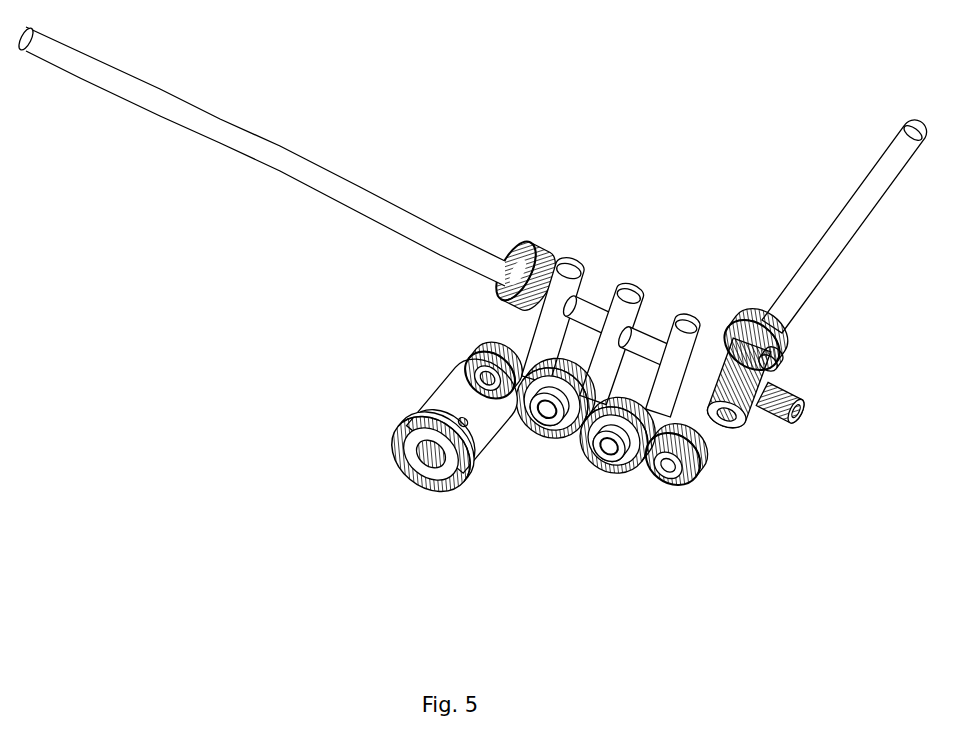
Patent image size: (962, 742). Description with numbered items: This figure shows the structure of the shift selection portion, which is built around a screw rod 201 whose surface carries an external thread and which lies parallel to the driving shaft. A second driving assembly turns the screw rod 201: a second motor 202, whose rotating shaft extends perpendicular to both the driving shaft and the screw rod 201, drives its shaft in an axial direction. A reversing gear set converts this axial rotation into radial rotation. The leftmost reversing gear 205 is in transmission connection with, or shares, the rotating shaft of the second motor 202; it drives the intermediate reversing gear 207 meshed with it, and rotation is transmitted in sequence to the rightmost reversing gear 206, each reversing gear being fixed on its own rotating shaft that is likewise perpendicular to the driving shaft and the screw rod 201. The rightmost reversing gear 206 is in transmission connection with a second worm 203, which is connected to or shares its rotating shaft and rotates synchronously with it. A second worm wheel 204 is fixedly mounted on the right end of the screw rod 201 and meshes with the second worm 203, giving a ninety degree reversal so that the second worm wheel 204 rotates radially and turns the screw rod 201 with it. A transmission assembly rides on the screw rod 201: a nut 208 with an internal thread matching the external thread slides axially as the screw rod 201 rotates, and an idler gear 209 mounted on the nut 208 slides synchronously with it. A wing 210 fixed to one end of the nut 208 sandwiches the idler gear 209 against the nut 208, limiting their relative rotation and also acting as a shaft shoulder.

The screw rod 201 is at (318, 180).
The second motor 202 is at (435, 403).
The second worm 203 is at (753, 322).
The second worm wheel 204 is at (797, 367).
The leftmost reversing gear 205 is at (480, 352).
The rightmost reversing gear 206 is at (700, 475).
The intermediate reversing gear 207 is at (558, 440).
The nut 208 is at (520, 247).
The idler gear 209 is at (533, 243).
The wing 210 is at (556, 258).